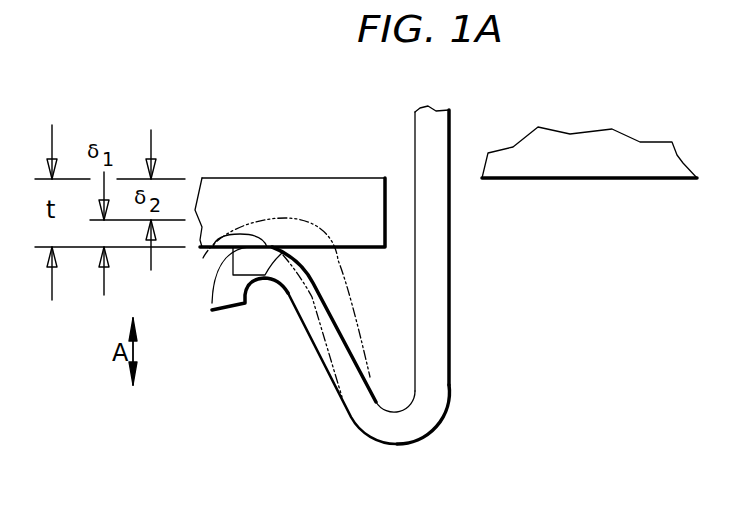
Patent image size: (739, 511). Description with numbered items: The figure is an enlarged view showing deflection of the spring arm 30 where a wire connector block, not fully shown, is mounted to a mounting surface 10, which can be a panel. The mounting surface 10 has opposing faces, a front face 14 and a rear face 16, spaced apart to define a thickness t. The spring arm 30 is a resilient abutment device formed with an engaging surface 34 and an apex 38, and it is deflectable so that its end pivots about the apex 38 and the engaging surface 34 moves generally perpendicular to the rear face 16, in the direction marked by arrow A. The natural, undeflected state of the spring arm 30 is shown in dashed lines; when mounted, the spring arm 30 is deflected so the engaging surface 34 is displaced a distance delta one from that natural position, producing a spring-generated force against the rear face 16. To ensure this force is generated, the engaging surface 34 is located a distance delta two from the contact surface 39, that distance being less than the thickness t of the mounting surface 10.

The mounting surface 10 is at (270, 202).
The front face 14 is at (230, 178).
The rear face 16 is at (205, 250).
The spring arm 30 is at (449, 142).
The engaging surface 34 is at (295, 218).
The apex 38 is at (428, 437).
The contact surface 39 is at (573, 205).